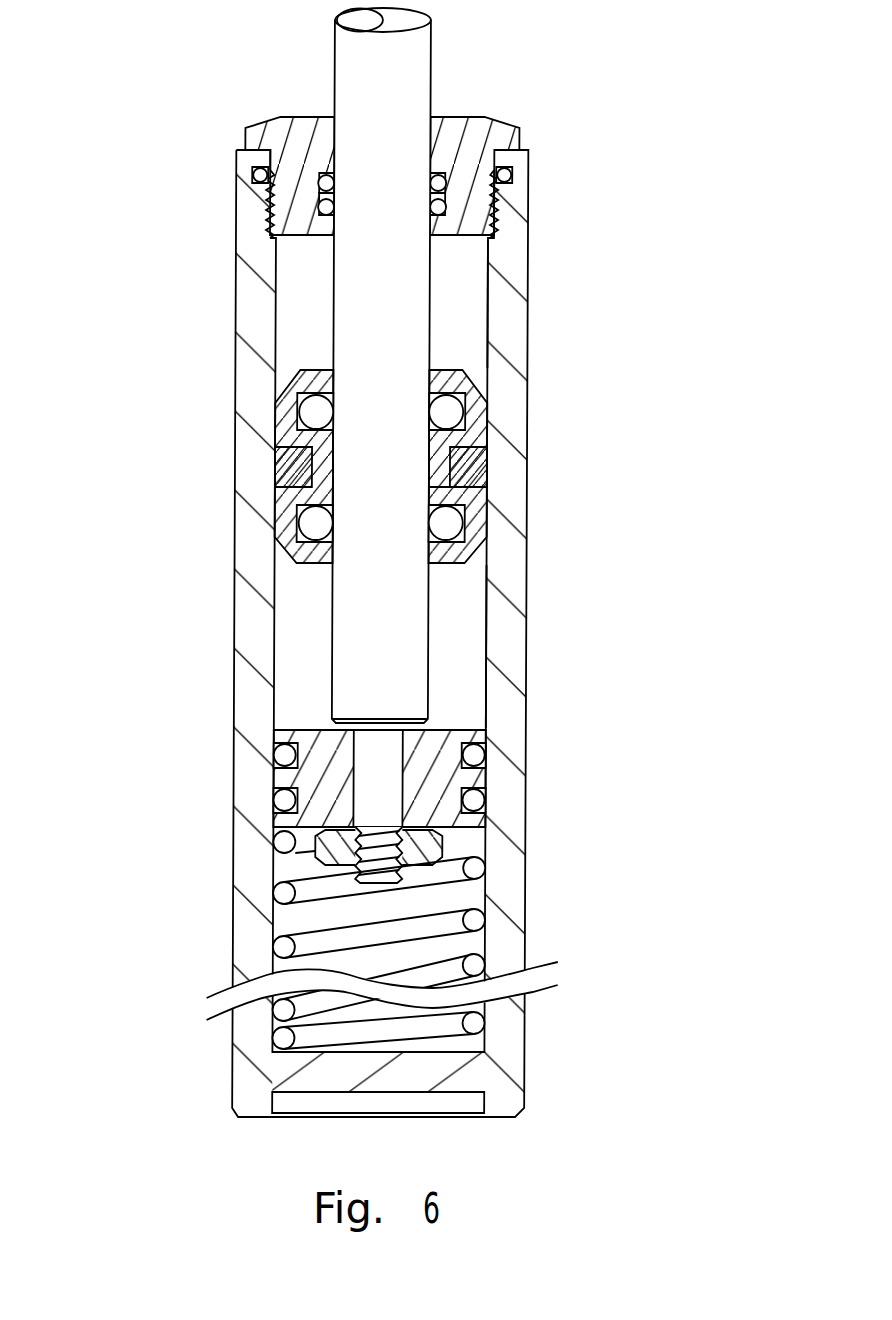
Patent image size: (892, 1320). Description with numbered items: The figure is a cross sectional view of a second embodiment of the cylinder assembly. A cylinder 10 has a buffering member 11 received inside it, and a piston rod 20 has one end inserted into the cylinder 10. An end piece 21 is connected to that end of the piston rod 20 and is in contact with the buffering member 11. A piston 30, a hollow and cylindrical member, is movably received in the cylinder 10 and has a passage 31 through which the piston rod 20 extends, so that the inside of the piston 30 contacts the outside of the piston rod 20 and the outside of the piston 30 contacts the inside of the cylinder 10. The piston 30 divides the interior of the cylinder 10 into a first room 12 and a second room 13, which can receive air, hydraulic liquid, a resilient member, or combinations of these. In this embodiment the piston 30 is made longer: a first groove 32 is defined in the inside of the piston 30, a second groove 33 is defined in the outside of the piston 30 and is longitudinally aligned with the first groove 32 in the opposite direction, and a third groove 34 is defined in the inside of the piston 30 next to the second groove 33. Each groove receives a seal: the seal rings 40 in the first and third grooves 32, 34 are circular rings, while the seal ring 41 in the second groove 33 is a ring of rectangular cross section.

The cylinder 10 is at (247, 935).
The buffering member 11 is at (473, 920).
The first room 12 is at (462, 302).
The second room 13 is at (457, 623).
The piston rod 20 is at (403, 80).
The end piece 21 is at (290, 775).
The piston 30 is at (283, 413).
The passage 31 is at (335, 444).
The first groove 32 is at (467, 540).
The second groove 33 is at (300, 480).
The third groove 34 is at (468, 388).
The seal ring 40 is at (447, 412).
The seal ring 41 is at (473, 465).